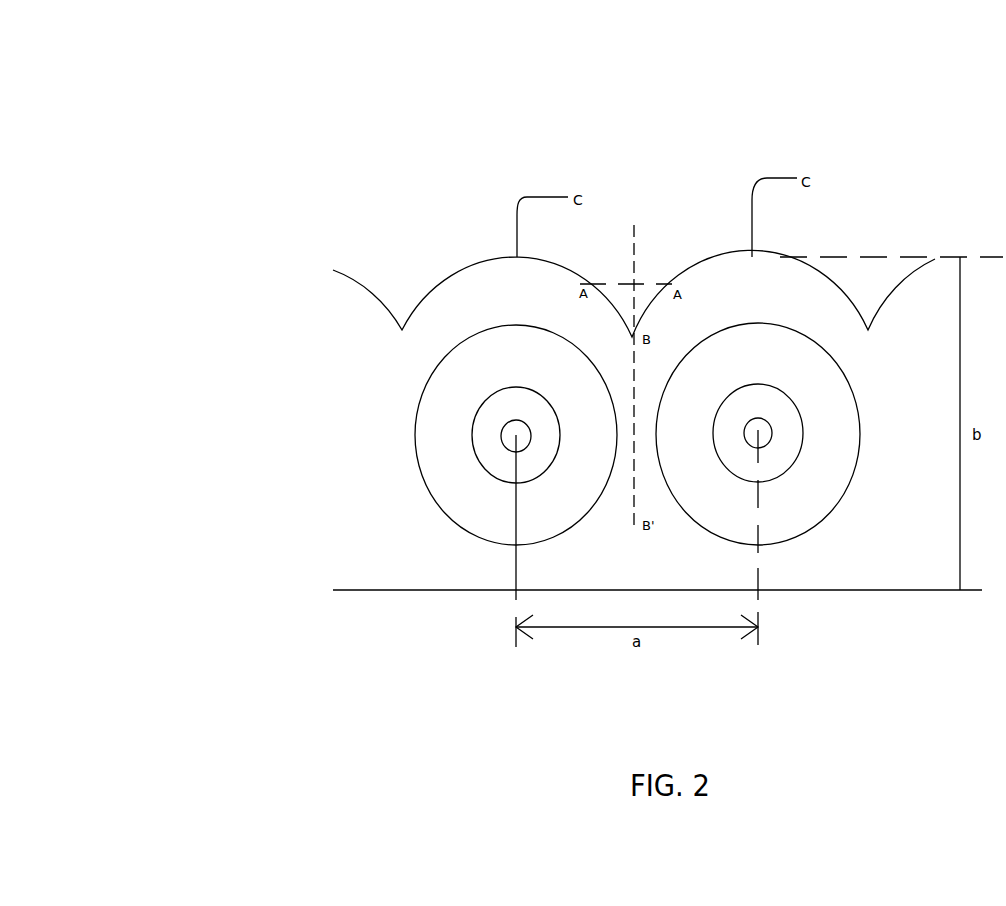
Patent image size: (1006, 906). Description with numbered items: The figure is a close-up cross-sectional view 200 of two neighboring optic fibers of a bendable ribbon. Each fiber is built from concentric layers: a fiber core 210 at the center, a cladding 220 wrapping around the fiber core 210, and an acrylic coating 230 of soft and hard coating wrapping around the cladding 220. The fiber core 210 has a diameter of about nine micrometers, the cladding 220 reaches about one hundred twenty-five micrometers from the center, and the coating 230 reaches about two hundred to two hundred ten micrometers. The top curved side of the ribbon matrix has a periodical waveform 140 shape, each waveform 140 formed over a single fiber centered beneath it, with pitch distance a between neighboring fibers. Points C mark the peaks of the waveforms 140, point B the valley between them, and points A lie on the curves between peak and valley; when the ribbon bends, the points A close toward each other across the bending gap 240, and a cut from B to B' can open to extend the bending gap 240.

The schematic cross-sectional view 200 is at (171, 46).
The waveform 140 is at (467, 266).
The fiber core 210 is at (516, 433).
The cladding 220 is at (512, 467).
The acrylic coating 230 is at (515, 523).
The bending gap 240 is at (634, 225).